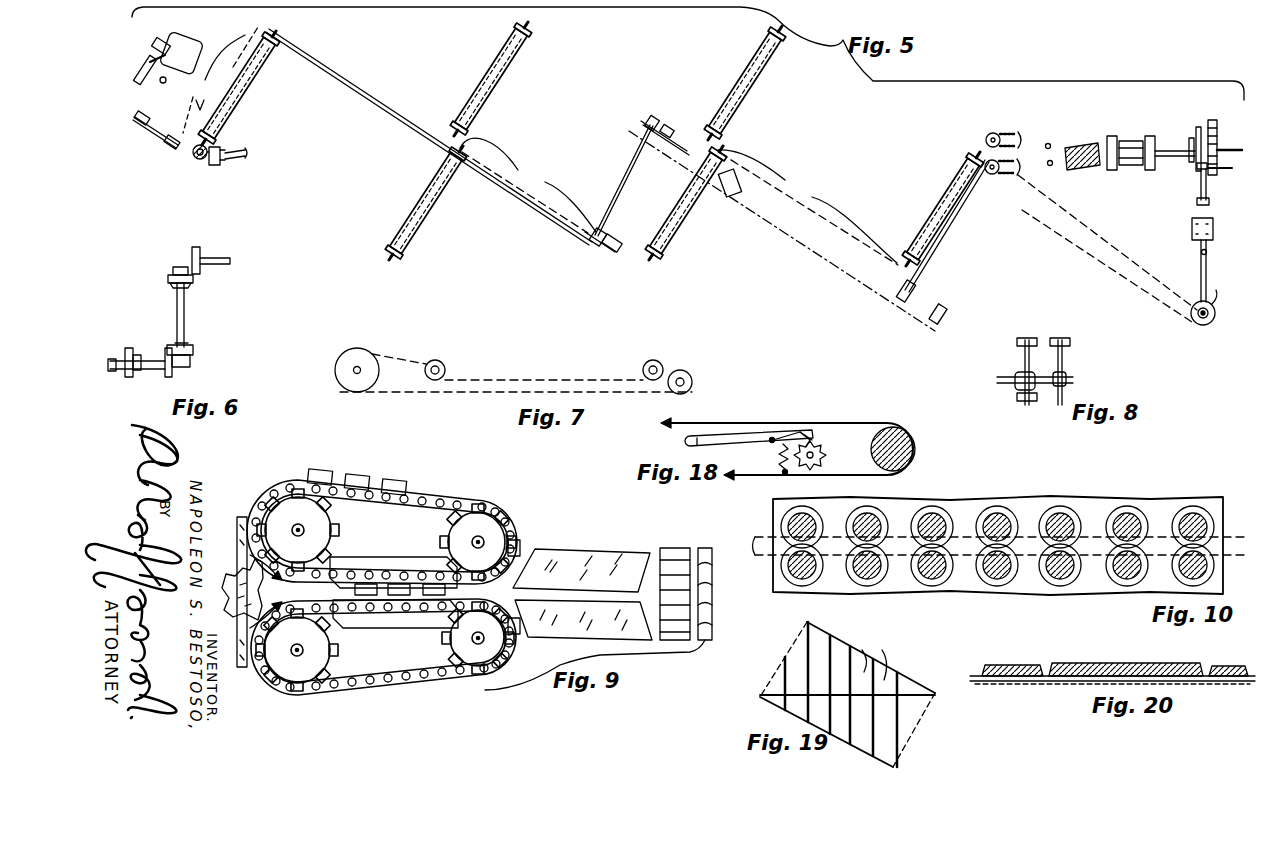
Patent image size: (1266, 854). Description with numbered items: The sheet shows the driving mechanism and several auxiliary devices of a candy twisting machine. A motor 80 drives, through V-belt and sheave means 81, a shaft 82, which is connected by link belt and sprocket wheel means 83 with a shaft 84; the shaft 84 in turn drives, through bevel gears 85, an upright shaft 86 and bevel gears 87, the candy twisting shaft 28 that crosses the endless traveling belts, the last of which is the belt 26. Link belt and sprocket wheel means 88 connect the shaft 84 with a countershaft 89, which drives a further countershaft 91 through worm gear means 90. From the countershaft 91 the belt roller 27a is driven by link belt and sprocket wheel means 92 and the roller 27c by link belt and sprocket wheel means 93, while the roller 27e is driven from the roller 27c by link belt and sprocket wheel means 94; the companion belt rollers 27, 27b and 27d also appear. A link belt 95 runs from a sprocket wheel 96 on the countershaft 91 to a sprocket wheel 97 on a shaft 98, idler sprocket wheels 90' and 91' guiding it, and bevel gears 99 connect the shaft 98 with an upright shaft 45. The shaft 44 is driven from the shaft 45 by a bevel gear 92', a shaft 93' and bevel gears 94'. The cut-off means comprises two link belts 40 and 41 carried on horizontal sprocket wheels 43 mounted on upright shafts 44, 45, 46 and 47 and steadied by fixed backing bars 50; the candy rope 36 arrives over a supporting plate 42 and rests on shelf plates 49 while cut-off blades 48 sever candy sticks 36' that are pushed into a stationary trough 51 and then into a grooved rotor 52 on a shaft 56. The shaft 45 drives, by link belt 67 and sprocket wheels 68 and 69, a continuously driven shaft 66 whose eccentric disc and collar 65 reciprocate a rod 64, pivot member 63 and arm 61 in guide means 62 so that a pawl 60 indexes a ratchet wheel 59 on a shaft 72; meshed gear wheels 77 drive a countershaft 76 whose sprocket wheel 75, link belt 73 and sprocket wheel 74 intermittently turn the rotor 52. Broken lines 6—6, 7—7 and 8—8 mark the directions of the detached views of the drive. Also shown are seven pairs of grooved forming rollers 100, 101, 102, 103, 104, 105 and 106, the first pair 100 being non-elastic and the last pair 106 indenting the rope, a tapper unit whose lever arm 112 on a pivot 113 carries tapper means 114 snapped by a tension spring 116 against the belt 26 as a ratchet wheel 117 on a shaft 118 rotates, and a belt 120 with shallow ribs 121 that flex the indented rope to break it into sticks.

In FIG. 5, the broken line 6— 6 is at (165, 143).
In FIG. 5, the broken line 7— 7 is at (626, 126).
In FIG. 8, the broken line 7— 7 is at (1012, 393).
In FIG. 5, the broken line 8— 8 is at (1013, 119).
In FIG. 18, the endless traveling belt 26 is at (858, 423).
In FIG. 5, the roller tube 27 is at (258, 56).
In FIG. 5, the roller 27a is at (428, 208).
In FIG. 5, the roller tube 27b is at (498, 87).
In FIG. 5, the roller 27c is at (690, 218).
In FIG. 5, the roller tube 27d is at (766, 72).
In FIG. 5, the roller 27e is at (932, 207).
In FIG. 5, the candy twisting shaft 28 is at (240, 157).
In FIG. 6, the candy twisting shaft 28 is at (220, 258).
In FIG. 10, the candy rope 36 is at (1002, 545).
In FIG. 19, the candy rope 36 is at (847, 694).
In FIG. 20, the candy rope 36 is at (1012, 660).
In FIG. 20, the candy stick 36' is at (1228, 659).
In FIG. 5, the link belt 40 is at (995, 130).
In FIG. 9, the link belt 40 is at (393, 575).
In FIG. 5, the link belt 41 is at (1016, 182).
In FIG. 9, the link belt 41 is at (408, 628).
In FIG. 9, the candy supporting plate 42 is at (237, 558).
In FIG. 5, the sprocket wheel 43 is at (1012, 162).
In FIG. 8, the sprocket wheel 43 is at (1060, 345).
In FIG. 9, the sprocket wheel 43 is at (476, 515).
In FIG. 5, the upright shaft 44 is at (985, 140).
In FIG. 8, the upright shaft 44 is at (1066, 360).
In FIG. 9, the upright shaft 44 is at (300, 527).
In FIG. 5, the upright shaft 45 is at (984, 167).
In FIG. 8, the upright shaft 45 is at (1022, 360).
In FIG. 9, the upright shaft 45 is at (298, 656).
In FIG. 5, the upright shaft 46 is at (1048, 143).
In FIG. 9, the upright shaft 46 is at (480, 540).
In FIG. 5, the upright shaft 47 is at (1051, 166).
In FIG. 9, the upright shaft 47 is at (455, 650).
In FIG. 9, the candy cut-off blade 48 is at (430, 490).
In FIG. 9, the candy supporting shelf plate 49 is at (385, 478).
In FIG. 9, the guide or backing bar 50 is at (425, 558).
In FIG. 5, the stationary trough 51 is at (1082, 145).
In FIG. 9, the stationary trough 51 is at (577, 558).
In FIG. 5, the grooved rotor 52 is at (1148, 136).
In FIG. 9, the grooved rotor 52 is at (678, 550).
In FIG. 5, the shaft 56 is at (1172, 165).
In FIG. 5, the ratchet wheel 59 is at (1198, 170).
In FIG. 5, the pawl 60 is at (1207, 190).
In FIG. 5, the reciprocable arm 61 is at (1196, 204).
In FIG. 5, the guide means 62 is at (1192, 229).
In FIG. 5, the pivot member 63 is at (1209, 252).
In FIG. 5, the rod 64 is at (1207, 270).
In FIG. 5, the eccentric disc and collar 65 is at (1210, 300).
In FIG. 5, the continuously driven shaft 66 is at (1215, 312).
In FIG. 5, the link belt 67 is at (1112, 262).
In FIG. 8, the link belt 67 is at (1010, 397).
In FIG. 5, the sprocket wheel 68 is at (1203, 325).
In FIG. 8, the sprocket wheel 69 is at (1035, 400).
In FIG. 5, the shaft 72 is at (1222, 168).
In FIG. 5, the link belt 73 is at (1191, 135).
In FIG. 5, the sprocket wheel 74 is at (1188, 147).
In FIG. 5, the sprocket wheel 75 is at (1198, 131).
In FIG. 5, the countershaft 76 is at (1217, 133).
In FIG. 5, the meshed gear wheels 77 is at (1220, 150).
In FIG. 5, the motor 80 is at (189, 43).
In FIG. 5, the V-belt and sheave means 81 is at (157, 52).
In FIG. 5, the shaft 82 is at (160, 80).
In FIG. 5, the link belt and sprocket wheel means 83 is at (150, 99).
In FIG. 5, the shaft 84 is at (163, 128).
In FIG. 6, the shaft 84 is at (145, 372).
In FIG. 6, the bevel gears 85 is at (185, 363).
In FIG. 5, the upright shaft 86 is at (197, 158).
In FIG. 6, the upright shaft 86 is at (186, 322).
In FIG. 5, the bevel gears 87 is at (226, 150).
In FIG. 6, the bevel gears 87 is at (175, 270).
In FIG. 5, the link belt and sprocket wheel means 88 is at (198, 100).
In FIG. 6, the link belt and sprocket wheel means 88 is at (124, 352).
In FIG. 5, the countershaft 89 is at (340, 78).
In FIG. 5, the worm gear means 90 is at (602, 252).
In FIG. 5, the idler sprocket wheel 90' is at (723, 194).
In FIG. 7, the idler sprocket wheel 90' is at (448, 358).
In FIG. 5, the countershaft 91 is at (624, 180).
In FIG. 7, the countershaft 91 is at (339, 394).
In FIG. 5, the idler sprocket wheel 91' is at (956, 302).
In FIG. 7, the idler sprocket wheel 91' is at (691, 364).
In FIG. 5, the link belt and sprocket wheel means 92 is at (528, 185).
In FIG. 8, the bevel gear 92' is at (1052, 395).
In FIG. 5, the link belt and sprocket wheel means 93 is at (625, 241).
In FIG. 8, the shaft 93' is at (1043, 363).
In FIG. 5, the link belt and sprocket wheel means 94 is at (808, 207).
In FIG. 8, the bevel gears 94' is at (1085, 373).
In FIG. 5, the link belt 95 is at (818, 239).
In FIG. 7, the link belt 95 is at (485, 385).
In FIG. 5, the sprocket wheel 96 is at (651, 122).
In FIG. 7, the sprocket wheel 96 is at (357, 348).
In FIG. 5, the sprocket wheel 97 is at (912, 296).
In FIG. 7, the sprocket wheel 97 is at (643, 370).
In FIG. 5, the shaft 98 is at (934, 250).
In FIG. 7, the shaft 98 is at (653, 358).
In FIG. 8, the shaft 98 is at (998, 382).
In FIG. 8, the bevel gears 99 is at (1012, 378).
In FIG. 10, the pair of grooved rollers 100 is at (812, 545).
In FIG. 10, the pair of grooved rollers 101 is at (877, 545).
In FIG. 10, the pair of grooved rollers 102 is at (942, 545).
In FIG. 10, the pair of grooved rollers 103 is at (1007, 545).
In FIG. 10, the pair of grooved rollers 104 is at (1072, 545).
In FIG. 10, the pair of grooved rollers 105 is at (1137, 545).
In FIG. 10, the pair of grooved rollers 106 is at (1200, 546).
In FIG. 18, the lever arm 112 is at (758, 436).
In FIG. 18, the pivot 113 is at (784, 434).
In FIG. 18, the tapper means 114 is at (706, 436).
In FIG. 18, the tension spring 116 is at (780, 458).
In FIG. 18, the ratchet wheel 117 is at (820, 447).
In FIG. 18, the shaft 118 is at (820, 470).
In FIG. 19, the belt 120 is at (822, 642).
In FIG. 20, the belt 120 is at (1068, 682).
In FIG. 19, the shallow ribs 121 is at (857, 665).
In FIG. 20, the shallow ribs 121 is at (1200, 684).